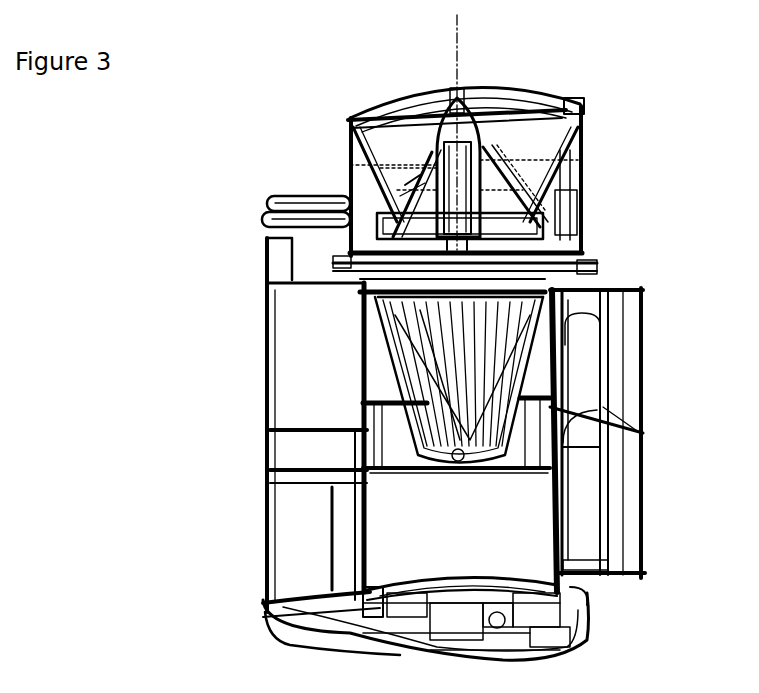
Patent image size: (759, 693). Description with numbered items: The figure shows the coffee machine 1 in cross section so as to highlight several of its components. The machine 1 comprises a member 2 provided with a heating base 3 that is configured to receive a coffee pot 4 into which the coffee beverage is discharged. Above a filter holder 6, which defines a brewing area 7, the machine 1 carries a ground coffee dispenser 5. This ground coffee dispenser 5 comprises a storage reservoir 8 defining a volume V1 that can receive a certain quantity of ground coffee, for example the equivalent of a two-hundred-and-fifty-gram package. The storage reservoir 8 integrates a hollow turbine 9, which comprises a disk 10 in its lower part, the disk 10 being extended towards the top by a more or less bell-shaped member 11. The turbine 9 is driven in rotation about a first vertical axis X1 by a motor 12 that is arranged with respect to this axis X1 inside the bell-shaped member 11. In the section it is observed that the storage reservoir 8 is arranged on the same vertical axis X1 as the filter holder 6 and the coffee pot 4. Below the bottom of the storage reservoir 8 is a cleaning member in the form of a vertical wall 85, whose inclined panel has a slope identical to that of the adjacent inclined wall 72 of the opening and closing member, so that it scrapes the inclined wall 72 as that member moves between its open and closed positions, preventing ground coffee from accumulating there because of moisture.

The coffee machine 1 is at (684, 99).
The first vertical axis X1 is at (457, 40).
The member 2 is at (265, 540).
The heating base 3 is at (585, 612).
The coffee pot 4 is at (568, 517).
The ground coffee dispenser 5 is at (606, 159).
The filter holder 6 is at (575, 360).
The brewing area 7 is at (410, 378).
The storage reservoir 8 is at (350, 163).
The turbine 9 is at (398, 163).
The volume V1 is at (368, 168).
The disk 10 is at (380, 204).
The bell-shaped member 11 is at (405, 190).
The motor 12 is at (467, 166).
The vertical wall 85 is at (495, 270).
The inclined wall 72 is at (520, 278).